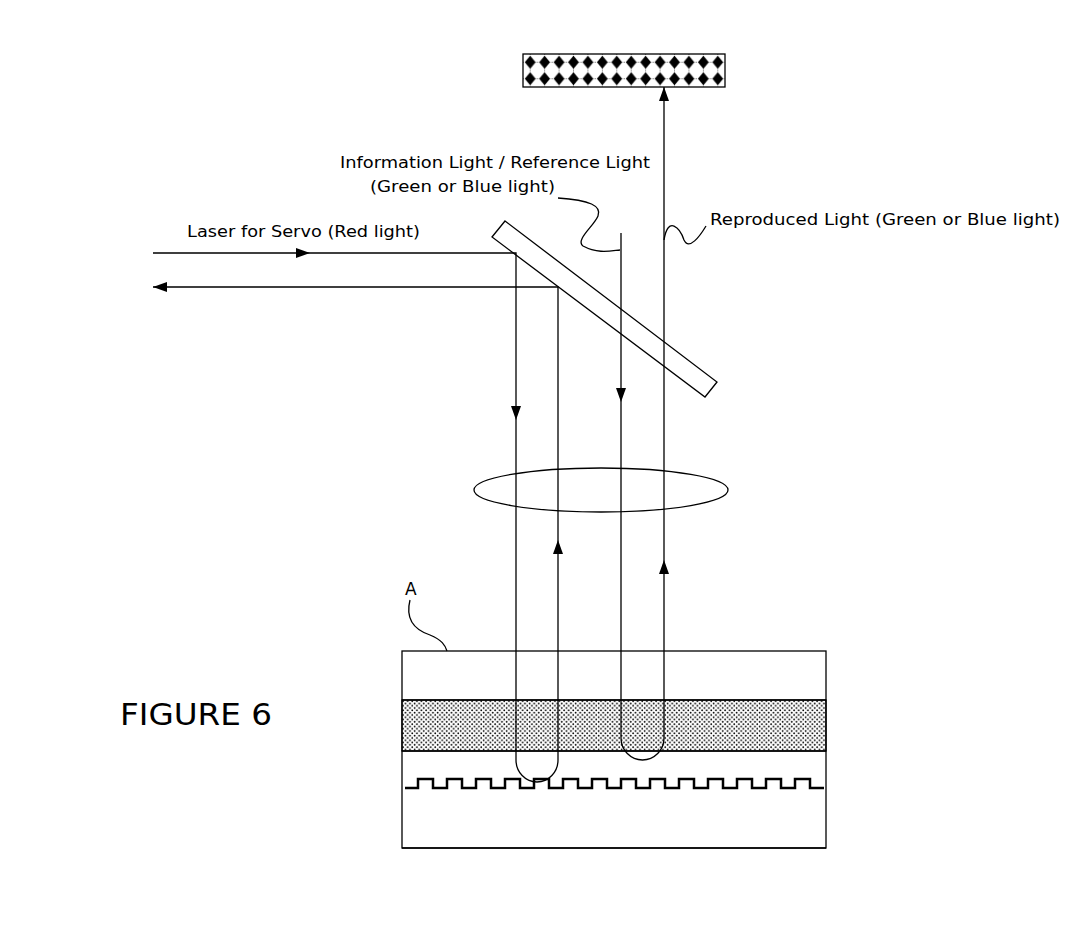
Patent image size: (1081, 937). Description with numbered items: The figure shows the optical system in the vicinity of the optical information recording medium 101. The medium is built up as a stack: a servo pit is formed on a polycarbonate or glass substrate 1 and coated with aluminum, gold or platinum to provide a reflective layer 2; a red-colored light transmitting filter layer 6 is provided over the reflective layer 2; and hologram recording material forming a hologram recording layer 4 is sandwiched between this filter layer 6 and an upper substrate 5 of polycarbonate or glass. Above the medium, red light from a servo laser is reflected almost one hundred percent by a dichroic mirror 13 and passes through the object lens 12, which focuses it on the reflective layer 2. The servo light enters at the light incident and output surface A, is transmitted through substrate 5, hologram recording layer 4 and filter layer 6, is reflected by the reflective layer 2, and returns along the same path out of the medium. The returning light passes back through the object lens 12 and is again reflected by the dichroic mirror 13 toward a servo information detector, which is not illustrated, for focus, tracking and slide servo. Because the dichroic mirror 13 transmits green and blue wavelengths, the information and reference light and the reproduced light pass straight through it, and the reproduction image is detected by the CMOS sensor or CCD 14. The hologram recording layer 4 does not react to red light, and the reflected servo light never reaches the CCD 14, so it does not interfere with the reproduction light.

The substrate 1 is at (796, 833).
The reflective layer 2 is at (411, 787).
The hologram recording layer 4 is at (818, 716).
The upper substrate 5 is at (800, 664).
The red-colored light transmitting filter layer 6 is at (818, 768).
The object lens 12 is at (718, 482).
The dichroic mirror 13 is at (717, 372).
The CMOS sensor or CCD 14 is at (725, 57).
The optical information recording medium 101 is at (644, 740).